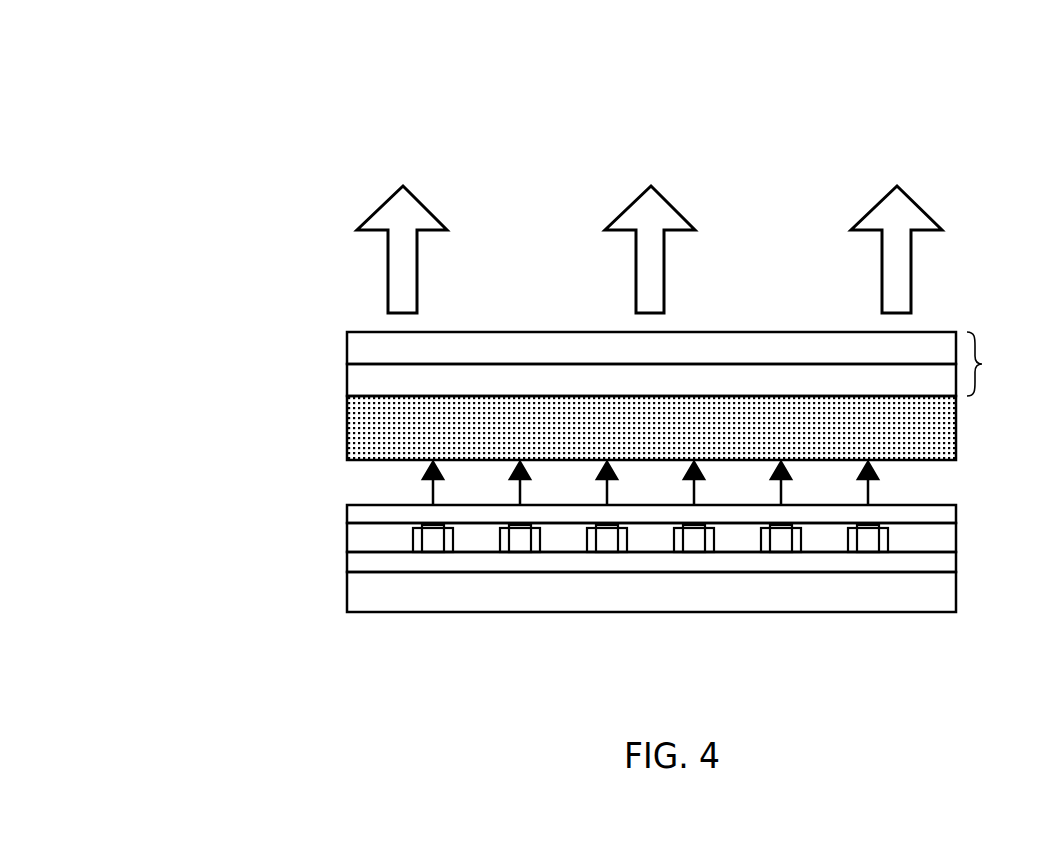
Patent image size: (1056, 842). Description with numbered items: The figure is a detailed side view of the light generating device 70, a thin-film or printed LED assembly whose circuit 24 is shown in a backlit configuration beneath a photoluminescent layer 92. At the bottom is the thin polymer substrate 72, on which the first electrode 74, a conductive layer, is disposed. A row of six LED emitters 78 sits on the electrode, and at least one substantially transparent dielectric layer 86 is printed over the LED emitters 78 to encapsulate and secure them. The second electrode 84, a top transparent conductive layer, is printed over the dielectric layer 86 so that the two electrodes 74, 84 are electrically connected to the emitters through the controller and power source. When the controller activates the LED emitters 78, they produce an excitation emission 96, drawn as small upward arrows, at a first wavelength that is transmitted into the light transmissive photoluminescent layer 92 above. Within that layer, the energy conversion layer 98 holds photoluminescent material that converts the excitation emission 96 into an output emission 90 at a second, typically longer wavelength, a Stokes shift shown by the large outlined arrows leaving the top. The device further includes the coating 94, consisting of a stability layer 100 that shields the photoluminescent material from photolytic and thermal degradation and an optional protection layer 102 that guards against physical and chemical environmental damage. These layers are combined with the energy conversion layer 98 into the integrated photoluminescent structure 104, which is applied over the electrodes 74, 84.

The circuit 24 is at (821, 108).
The light generating device 70 is at (651, 399).
The substrate 72 is at (347, 592).
The first electrode 74 is at (347, 562).
The LED emitters 78 is at (433, 548).
The second electrode 84 is at (347, 515).
The dielectric layer 86 is at (347, 540).
The output emission 90 is at (420, 212).
The photoluminescent layer 92 is at (347, 430).
The coating 94 is at (988, 364).
The excitation emission 96 is at (913, 486).
The energy conversion layer 98 is at (912, 428).
The stability layer 100 is at (347, 381).
The protection layer 102 is at (347, 349).
The integrated photoluminescent structure 104 is at (230, 385).